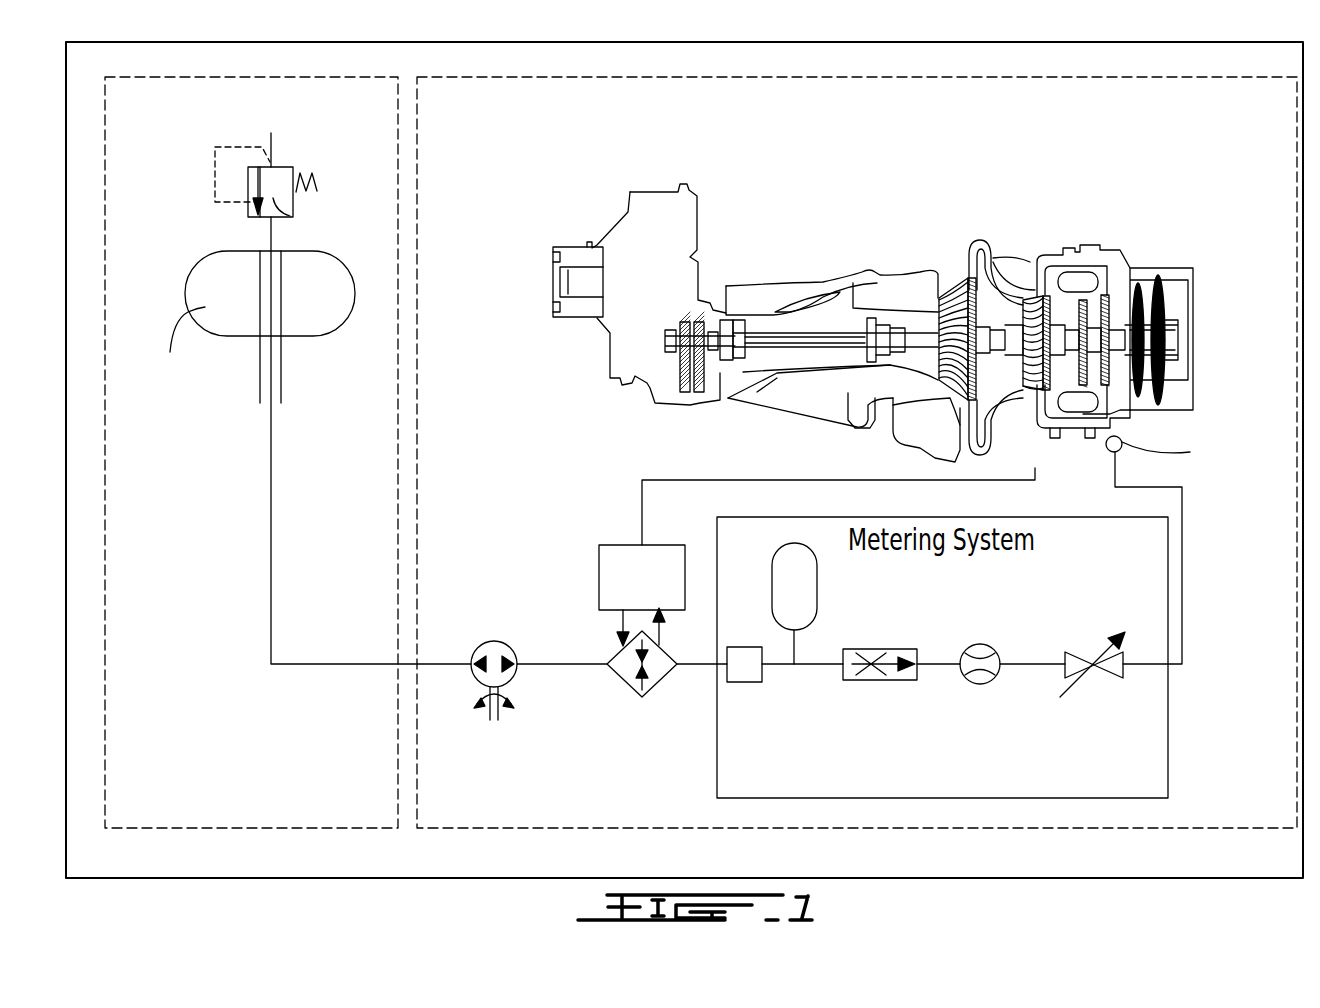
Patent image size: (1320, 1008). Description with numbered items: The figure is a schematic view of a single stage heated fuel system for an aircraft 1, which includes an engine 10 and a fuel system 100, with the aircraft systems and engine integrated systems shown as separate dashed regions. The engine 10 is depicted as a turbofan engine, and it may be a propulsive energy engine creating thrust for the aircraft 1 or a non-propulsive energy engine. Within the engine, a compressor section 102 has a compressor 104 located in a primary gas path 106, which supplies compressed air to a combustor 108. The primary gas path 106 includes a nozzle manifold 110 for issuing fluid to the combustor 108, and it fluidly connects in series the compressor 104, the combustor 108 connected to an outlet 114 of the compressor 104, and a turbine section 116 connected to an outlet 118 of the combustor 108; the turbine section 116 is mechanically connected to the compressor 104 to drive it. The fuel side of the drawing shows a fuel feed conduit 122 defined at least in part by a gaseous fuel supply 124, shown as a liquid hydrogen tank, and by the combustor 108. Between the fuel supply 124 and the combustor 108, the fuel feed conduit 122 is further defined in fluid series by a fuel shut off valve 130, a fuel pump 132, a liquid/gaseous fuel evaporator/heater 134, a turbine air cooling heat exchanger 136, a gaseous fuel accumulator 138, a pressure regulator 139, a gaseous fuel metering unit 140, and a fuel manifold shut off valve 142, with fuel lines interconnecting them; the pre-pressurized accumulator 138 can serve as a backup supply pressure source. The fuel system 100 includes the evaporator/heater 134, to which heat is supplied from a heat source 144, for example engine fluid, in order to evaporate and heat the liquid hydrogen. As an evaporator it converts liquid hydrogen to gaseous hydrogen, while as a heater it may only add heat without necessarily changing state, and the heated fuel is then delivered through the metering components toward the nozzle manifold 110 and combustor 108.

The aircraft 1 is at (133, 42).
The engine 10 is at (890, 180).
The fuel system 100 is at (304, 706).
The compressor section 102 is at (933, 290).
The compressor 104 is at (958, 310).
The primary gas path 106 is at (957, 410).
The combustor 108 is at (1045, 375).
The nozzle manifold 110 is at (1106, 446).
The outlet of the compressor 114 is at (1055, 300).
The turbine section 116 is at (1118, 293).
The outlet of the combustor 118 is at (1185, 318).
The fuel feed conduit 122 is at (339, 664).
The gaseous fuel supply 124 is at (205, 268).
The fuel shut off valve 130 is at (293, 217).
The fuel pump 132 is at (482, 645).
The liquid/gaseous fuel evaporator/heater 134 is at (613, 650).
The turbine air cooling heat exchanger 136 is at (745, 683).
The gaseous fuel accumulator 138 is at (772, 588).
The pressure regulator 139 is at (880, 649).
The gaseous fuel metering unit 140 is at (980, 644).
The fuel manifold shut off valve 142 is at (1079, 656).
The heat source 144 is at (614, 545).